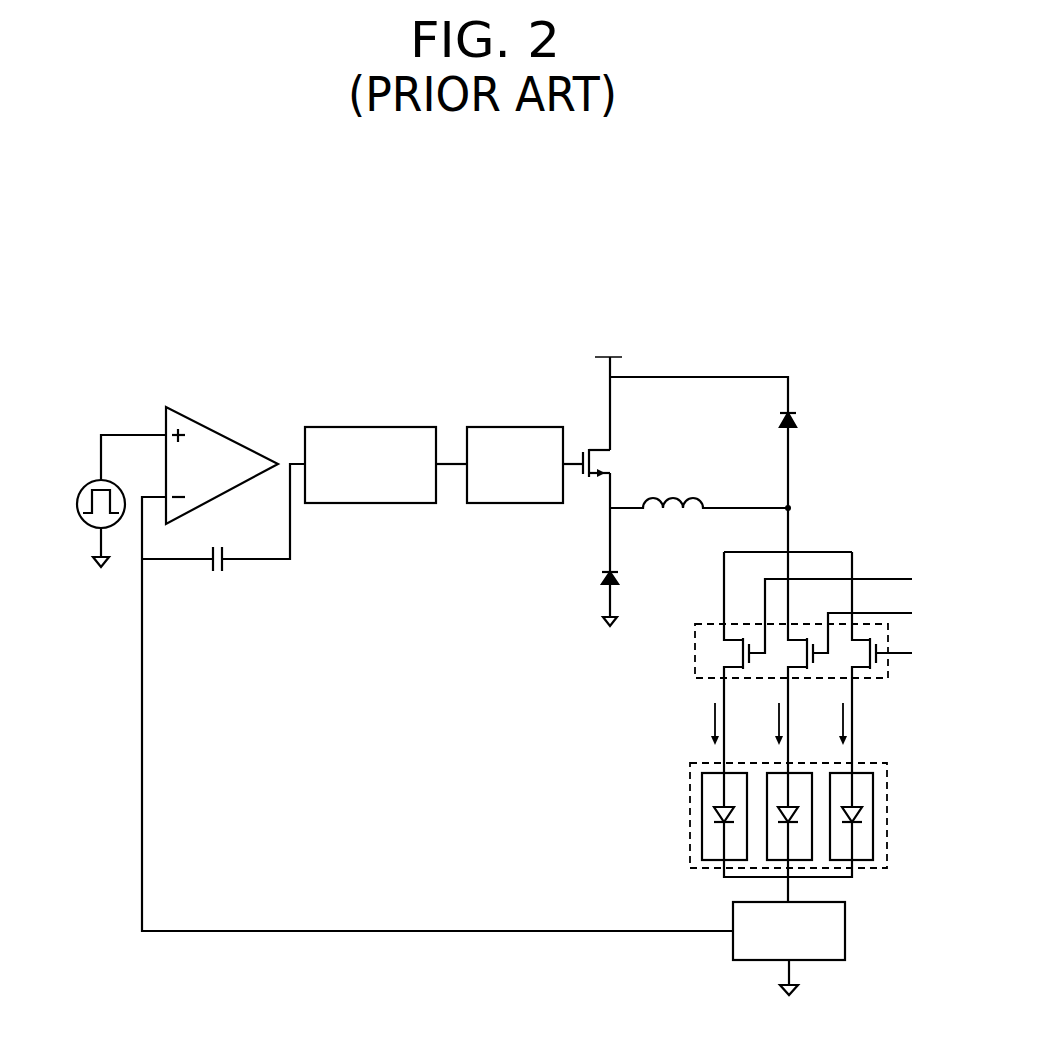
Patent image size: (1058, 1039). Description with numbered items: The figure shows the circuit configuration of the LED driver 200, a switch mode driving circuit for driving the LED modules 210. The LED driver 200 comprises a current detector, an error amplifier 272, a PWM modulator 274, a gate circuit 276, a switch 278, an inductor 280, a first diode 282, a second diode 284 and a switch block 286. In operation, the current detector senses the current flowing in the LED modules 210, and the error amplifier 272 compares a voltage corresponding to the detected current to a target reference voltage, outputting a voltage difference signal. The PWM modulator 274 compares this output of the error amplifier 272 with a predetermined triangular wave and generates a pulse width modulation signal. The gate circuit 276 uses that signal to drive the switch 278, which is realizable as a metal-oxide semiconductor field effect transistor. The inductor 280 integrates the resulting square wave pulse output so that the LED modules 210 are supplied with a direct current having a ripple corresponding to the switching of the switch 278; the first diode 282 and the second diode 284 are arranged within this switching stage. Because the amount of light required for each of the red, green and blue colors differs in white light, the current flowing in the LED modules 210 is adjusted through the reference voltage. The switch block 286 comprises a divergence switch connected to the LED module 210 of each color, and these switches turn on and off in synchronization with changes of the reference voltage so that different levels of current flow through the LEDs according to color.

The LED driver 200 is at (408, 320).
The error amplifier 272 is at (216, 430).
The PWM modulator 274 is at (406, 427).
The gate circuit 276 is at (494, 427).
The switch 278 is at (612, 446).
The inductor 280 is at (697, 504).
The first diode 282 is at (604, 574).
The second diode 284 is at (794, 413).
The switch block 286 is at (695, 675).
The LED modules 210 is at (690, 818).